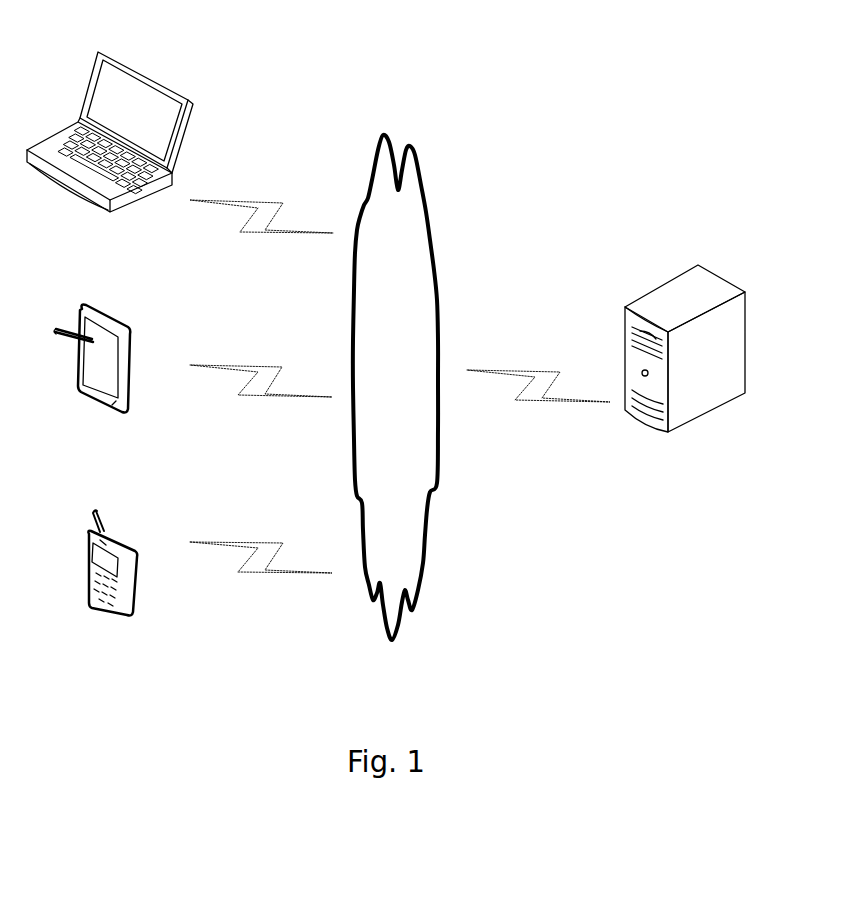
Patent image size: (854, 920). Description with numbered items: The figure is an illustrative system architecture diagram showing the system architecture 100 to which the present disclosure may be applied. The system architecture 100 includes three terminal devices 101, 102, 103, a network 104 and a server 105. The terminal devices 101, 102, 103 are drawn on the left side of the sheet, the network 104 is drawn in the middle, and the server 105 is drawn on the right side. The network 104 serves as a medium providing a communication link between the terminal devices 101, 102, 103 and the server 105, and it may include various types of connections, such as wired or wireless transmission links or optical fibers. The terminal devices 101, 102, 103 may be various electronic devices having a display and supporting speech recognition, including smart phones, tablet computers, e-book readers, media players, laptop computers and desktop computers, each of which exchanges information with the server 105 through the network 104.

The system architecture 100 is at (608, 42).
The terminal device 101 is at (112, 584).
The terminal device 102 is at (92, 379).
The terminal device 103 is at (110, 150).
The network 104 is at (395, 387).
The server 105 is at (685, 366).